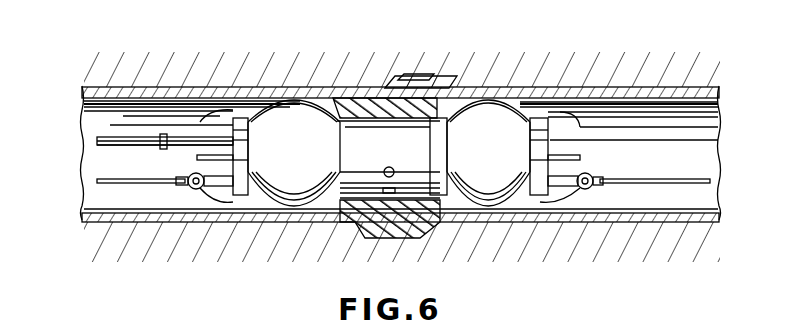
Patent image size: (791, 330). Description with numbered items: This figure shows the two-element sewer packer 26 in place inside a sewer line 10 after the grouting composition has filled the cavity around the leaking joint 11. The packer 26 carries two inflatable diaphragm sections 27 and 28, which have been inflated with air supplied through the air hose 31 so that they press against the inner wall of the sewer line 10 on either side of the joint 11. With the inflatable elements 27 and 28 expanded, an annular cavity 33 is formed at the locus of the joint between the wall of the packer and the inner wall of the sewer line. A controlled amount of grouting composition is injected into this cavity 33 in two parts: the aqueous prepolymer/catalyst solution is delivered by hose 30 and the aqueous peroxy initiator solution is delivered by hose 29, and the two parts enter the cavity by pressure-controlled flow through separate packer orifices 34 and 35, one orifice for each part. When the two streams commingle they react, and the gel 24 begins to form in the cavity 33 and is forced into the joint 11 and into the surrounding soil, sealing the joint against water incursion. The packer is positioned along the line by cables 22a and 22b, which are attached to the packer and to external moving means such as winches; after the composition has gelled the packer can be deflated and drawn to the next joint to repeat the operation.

The sewer line 10 is at (364, 84).
The joint 11 is at (415, 80).
The gel 24 is at (440, 77).
The sewer packer 26 is at (328, 112).
The inflatable diaphragm section 27 is at (297, 113).
The inflatable diaphragm section 28 is at (520, 100).
The hose 29 is at (100, 145).
The hose 30 is at (128, 130).
The air hose 31 is at (97, 140).
The cable 22a is at (105, 182).
The cable 22b is at (657, 180).
The annular cavity 33 is at (356, 212).
The packer orifice 34 is at (388, 168).
The packer orifice 35 is at (395, 190).